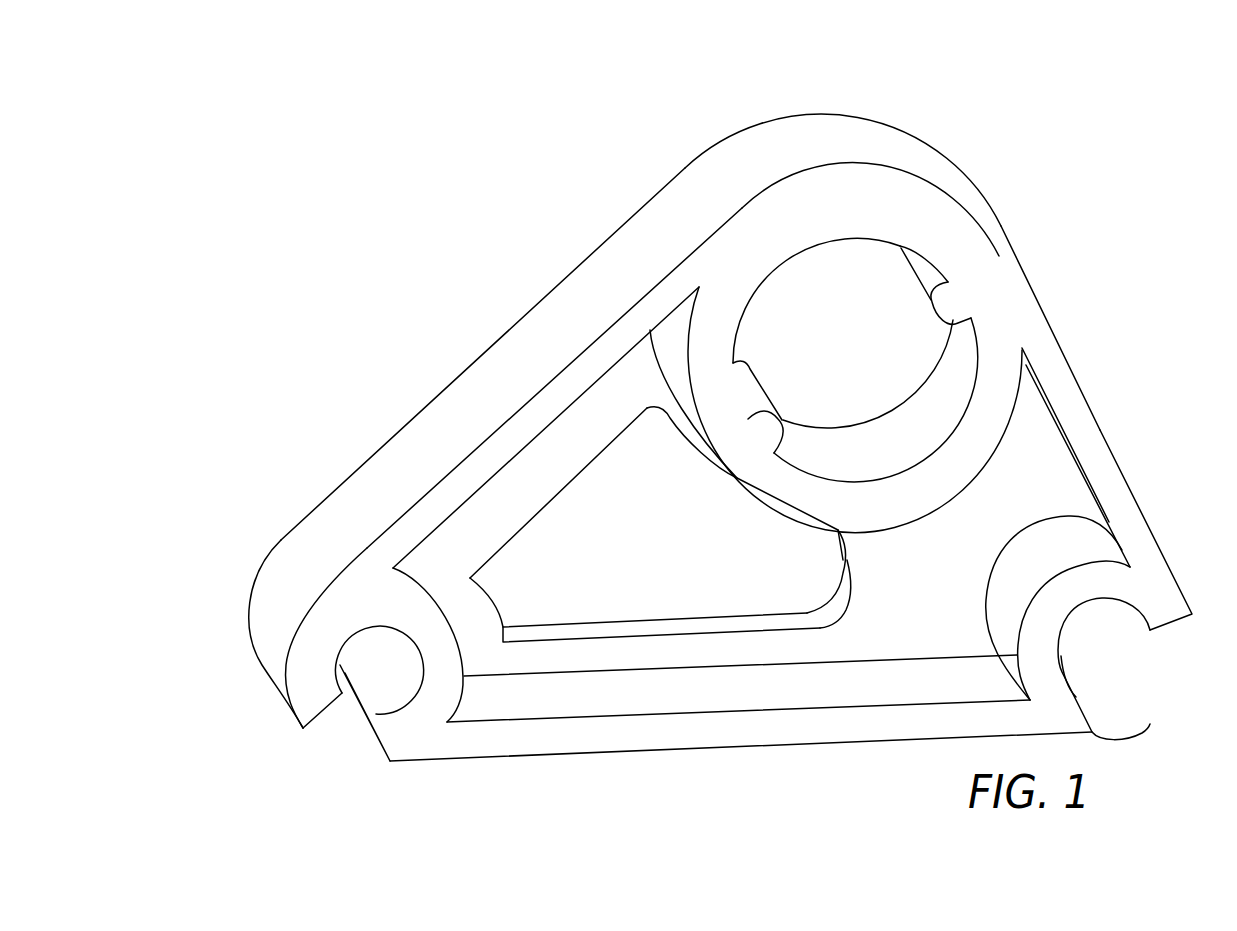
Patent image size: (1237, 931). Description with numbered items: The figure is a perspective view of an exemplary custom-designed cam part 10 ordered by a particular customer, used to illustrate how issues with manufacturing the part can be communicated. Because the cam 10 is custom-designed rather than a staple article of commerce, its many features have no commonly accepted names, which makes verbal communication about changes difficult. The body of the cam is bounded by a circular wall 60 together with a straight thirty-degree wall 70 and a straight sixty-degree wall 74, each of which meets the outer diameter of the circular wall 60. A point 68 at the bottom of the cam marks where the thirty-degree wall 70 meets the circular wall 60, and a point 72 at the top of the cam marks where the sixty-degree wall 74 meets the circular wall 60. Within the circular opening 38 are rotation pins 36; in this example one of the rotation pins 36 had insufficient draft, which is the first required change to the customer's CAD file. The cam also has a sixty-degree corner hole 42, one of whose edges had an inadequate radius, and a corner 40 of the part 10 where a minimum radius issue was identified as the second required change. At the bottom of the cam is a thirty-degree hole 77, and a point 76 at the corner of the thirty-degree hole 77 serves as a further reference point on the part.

The cam part 10 is at (443, 296).
The rotation pin 36 is at (783, 418).
The circular opening 38 is at (880, 288).
The corner 40 is at (1150, 724).
The 60° corner hole 42 is at (1105, 640).
The circular wall 60 is at (833, 194).
The point at bottom of cam 68 is at (684, 165).
The straight 30° wall 70 is at (415, 438).
The point at top of cam 72 is at (1028, 272).
The straight 60° wall 74 is at (1100, 440).
The point at bottom of cam 76 is at (268, 677).
The 30° hole 77 is at (380, 626).